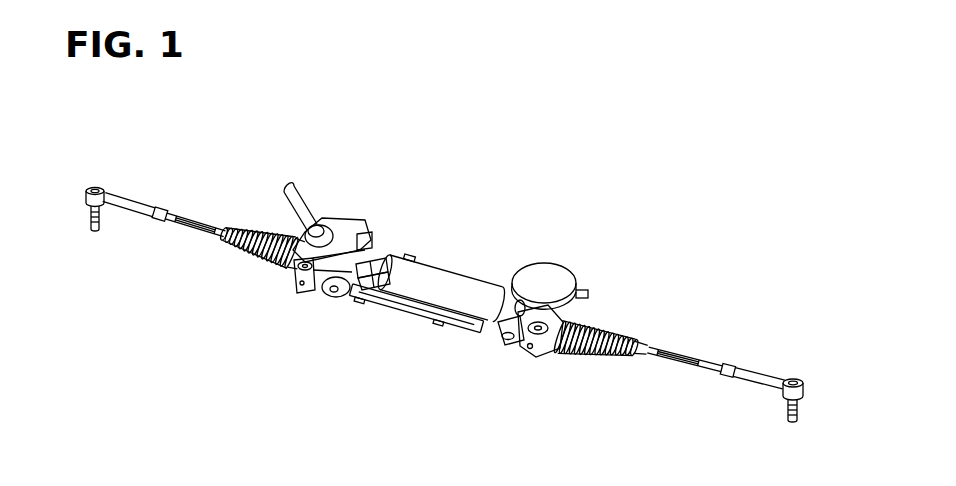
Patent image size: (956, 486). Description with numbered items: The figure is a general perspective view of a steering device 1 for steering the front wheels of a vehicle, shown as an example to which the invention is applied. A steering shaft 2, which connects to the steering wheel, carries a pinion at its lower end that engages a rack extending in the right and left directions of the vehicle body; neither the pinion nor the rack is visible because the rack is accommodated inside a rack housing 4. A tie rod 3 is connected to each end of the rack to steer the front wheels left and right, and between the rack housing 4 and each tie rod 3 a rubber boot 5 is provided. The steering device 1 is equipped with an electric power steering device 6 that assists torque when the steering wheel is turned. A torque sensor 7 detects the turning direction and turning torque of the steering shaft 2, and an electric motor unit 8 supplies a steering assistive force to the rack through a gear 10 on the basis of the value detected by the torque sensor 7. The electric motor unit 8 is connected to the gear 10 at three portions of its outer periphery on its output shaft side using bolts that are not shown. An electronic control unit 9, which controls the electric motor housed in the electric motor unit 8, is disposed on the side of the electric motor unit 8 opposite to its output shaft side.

The steering device 1 is at (420, 325).
The steering shaft 2 is at (308, 204).
The tie rod 3 is at (133, 199).
The rack housing 4 is at (550, 345).
The rubber boot 5 is at (244, 232).
The electric power steering device 6 is at (432, 238).
The torque sensor 7 is at (369, 232).
The electric motor unit 8 is at (460, 275).
The electronic control unit (ECU) 9 is at (402, 250).
The gear 10 is at (541, 265).